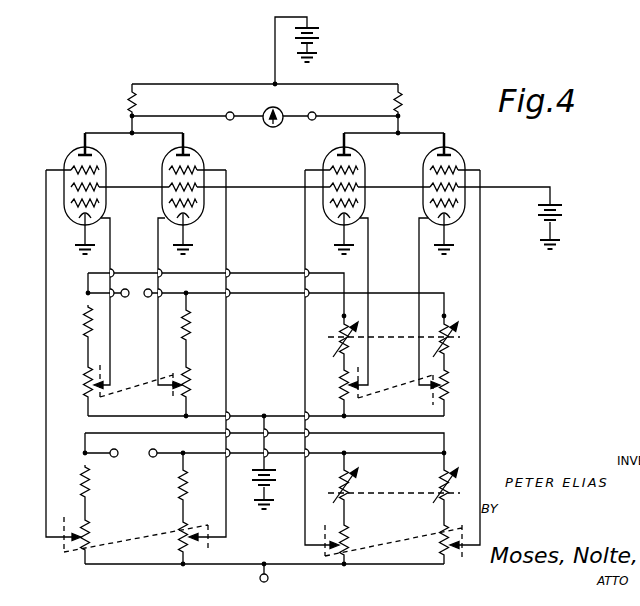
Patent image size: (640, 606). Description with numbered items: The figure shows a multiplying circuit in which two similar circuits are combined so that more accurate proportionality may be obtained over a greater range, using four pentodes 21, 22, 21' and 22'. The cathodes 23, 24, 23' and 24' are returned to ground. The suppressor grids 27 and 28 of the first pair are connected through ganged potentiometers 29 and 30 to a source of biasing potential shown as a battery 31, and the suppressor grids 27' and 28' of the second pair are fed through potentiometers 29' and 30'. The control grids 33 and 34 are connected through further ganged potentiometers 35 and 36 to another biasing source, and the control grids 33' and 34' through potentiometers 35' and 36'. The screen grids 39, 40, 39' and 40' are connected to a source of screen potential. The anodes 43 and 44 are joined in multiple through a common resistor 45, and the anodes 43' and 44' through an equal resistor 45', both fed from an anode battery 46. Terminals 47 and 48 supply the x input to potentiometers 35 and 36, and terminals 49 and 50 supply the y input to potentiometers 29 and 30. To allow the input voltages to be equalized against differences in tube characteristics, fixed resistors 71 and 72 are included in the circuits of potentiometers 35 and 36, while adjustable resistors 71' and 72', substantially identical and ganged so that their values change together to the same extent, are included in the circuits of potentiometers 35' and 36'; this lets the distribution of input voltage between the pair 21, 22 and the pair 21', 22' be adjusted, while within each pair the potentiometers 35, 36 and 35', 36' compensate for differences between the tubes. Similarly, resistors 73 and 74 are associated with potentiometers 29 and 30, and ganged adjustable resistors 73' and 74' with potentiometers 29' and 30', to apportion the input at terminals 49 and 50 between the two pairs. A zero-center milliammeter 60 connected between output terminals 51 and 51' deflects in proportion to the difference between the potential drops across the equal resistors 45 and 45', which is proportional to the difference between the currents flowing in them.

The pentode 21 is at (58, 176).
The pentode 22 is at (209, 174).
The pentode 21' is at (327, 186).
The pentode 22' is at (482, 179).
The cathode 23 is at (75, 242).
The cathode 24 is at (195, 233).
The cathode 23' is at (333, 237).
The cathode 24' is at (418, 240).
The suppressor grid 27 is at (62, 162).
The suppressor grid 28 is at (169, 158).
The suppressor grid 27' is at (318, 174).
The suppressor grid 28' is at (486, 163).
The screen grid 39 is at (52, 185).
The screen grid 40 is at (166, 178).
The screen grid 39' is at (314, 202).
The screen grid 40' is at (421, 177).
The control grid 33 is at (139, 368).
The control grid 34 is at (166, 207).
The control grid 33' is at (313, 222).
The control grid 34' is at (419, 207).
The anode 43 is at (69, 134).
The anode 44 is at (197, 136).
The anode 43' is at (328, 140).
The anode 44' is at (463, 136).
The resistor 45 is at (103, 86).
The resistor 45' is at (417, 86).
The battery 46 is at (322, 42).
The output terminal 51 is at (209, 105).
The output terminal 51' is at (332, 105).
The zero-center current indicating device 60 is at (282, 109).
The fixed resistor 71 is at (72, 333).
The fixed resistor 72 is at (199, 325).
The adjustable resistor 71' is at (336, 347).
The adjustable resistor 72' is at (475, 338).
The potentiometer 35 is at (72, 391).
The potentiometer 36 is at (199, 381).
The potentiometer 35' is at (329, 387).
The potentiometer 36' is at (479, 385).
The input terminal 47 is at (126, 298).
The input terminal 48 is at (148, 298).
The input terminal 49 is at (116, 456).
The input terminal 50 is at (155, 458).
The resistor 73 is at (105, 482).
The resistor 74 is at (165, 486).
The ganged adjustable resistor 73' is at (365, 475).
The ganged adjustable resistor 74' is at (428, 484).
The potentiometer 29 is at (105, 531).
The potentiometer 30 is at (161, 540).
The potentiometer 29' is at (365, 532).
The potentiometer 30' is at (422, 543).
The battery 31 is at (260, 578).